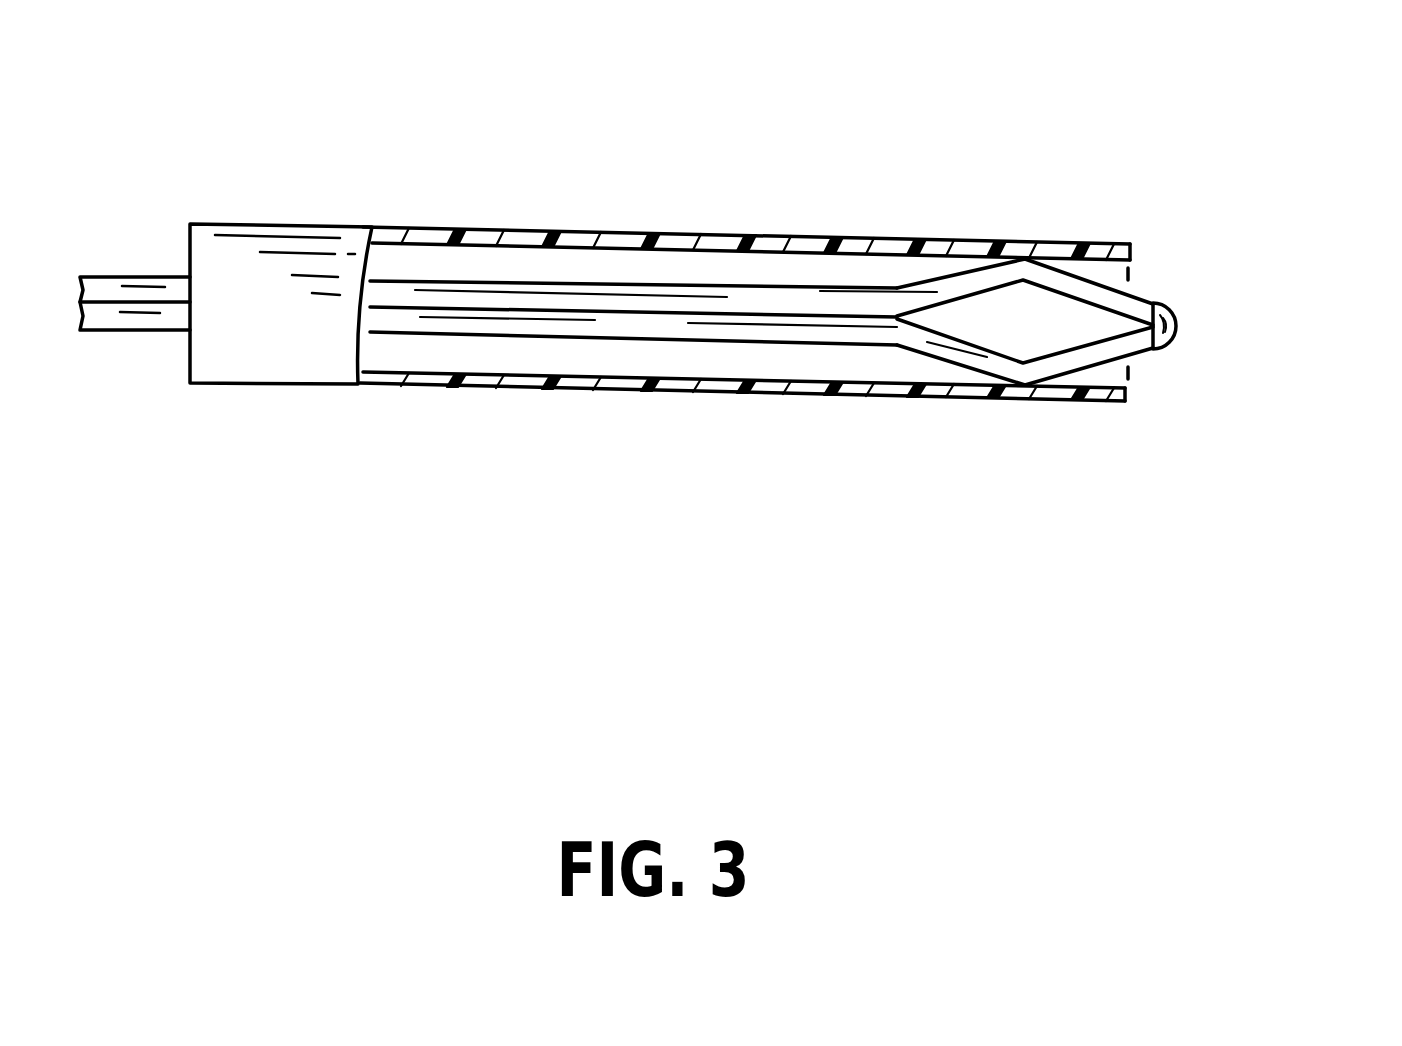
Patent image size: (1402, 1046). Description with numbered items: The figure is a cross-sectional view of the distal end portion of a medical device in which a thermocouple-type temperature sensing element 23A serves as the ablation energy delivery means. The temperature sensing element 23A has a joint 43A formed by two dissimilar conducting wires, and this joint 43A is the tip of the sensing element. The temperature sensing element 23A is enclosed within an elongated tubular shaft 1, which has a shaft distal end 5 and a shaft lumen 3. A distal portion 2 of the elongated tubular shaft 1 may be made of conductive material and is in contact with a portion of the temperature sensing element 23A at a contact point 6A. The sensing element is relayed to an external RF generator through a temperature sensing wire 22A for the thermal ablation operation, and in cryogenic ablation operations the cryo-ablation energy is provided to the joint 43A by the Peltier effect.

The elongated tubular shaft 1 is at (363, 223).
The distal portion 2 is at (842, 177).
The shaft lumen 3 is at (635, 363).
The shaft distal end 5 is at (1140, 240).
The contact point 6A is at (1010, 407).
The temperature sensing wire 22A is at (542, 337).
The temperature sensing element 23A is at (1183, 376).
The joint 43A is at (1177, 305).